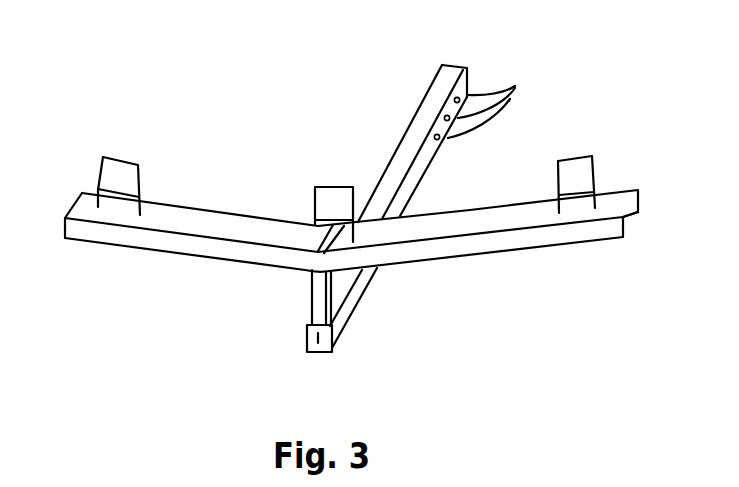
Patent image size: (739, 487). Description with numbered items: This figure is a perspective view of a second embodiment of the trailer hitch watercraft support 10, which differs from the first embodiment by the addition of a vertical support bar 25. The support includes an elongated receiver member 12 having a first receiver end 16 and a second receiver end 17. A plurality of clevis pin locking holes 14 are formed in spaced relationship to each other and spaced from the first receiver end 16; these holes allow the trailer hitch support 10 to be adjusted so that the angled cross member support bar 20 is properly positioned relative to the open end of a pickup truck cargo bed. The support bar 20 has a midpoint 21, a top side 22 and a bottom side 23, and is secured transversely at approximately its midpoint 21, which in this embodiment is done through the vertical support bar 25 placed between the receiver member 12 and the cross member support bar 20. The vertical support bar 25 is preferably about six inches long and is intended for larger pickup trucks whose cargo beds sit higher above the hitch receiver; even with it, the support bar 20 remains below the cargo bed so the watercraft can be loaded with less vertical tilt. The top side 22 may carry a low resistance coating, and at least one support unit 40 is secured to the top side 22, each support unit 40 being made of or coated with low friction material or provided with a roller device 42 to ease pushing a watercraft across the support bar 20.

The trailer hitch watercraft support 10 is at (232, 21).
The receiver member 12 is at (423, 117).
The clevis pin locking holes 14 is at (491, 95).
The first receiver end 16 is at (460, 53).
The second receiver end 17 is at (318, 341).
The angled cross member support bar 20 is at (124, 236).
The midpoint 21 is at (316, 228).
The top side 22 is at (422, 223).
The bottom side 23 is at (613, 250).
The vertical support bar 25 is at (310, 298).
The support unit 40 is at (89, 172).
The roller device 42 is at (570, 207).